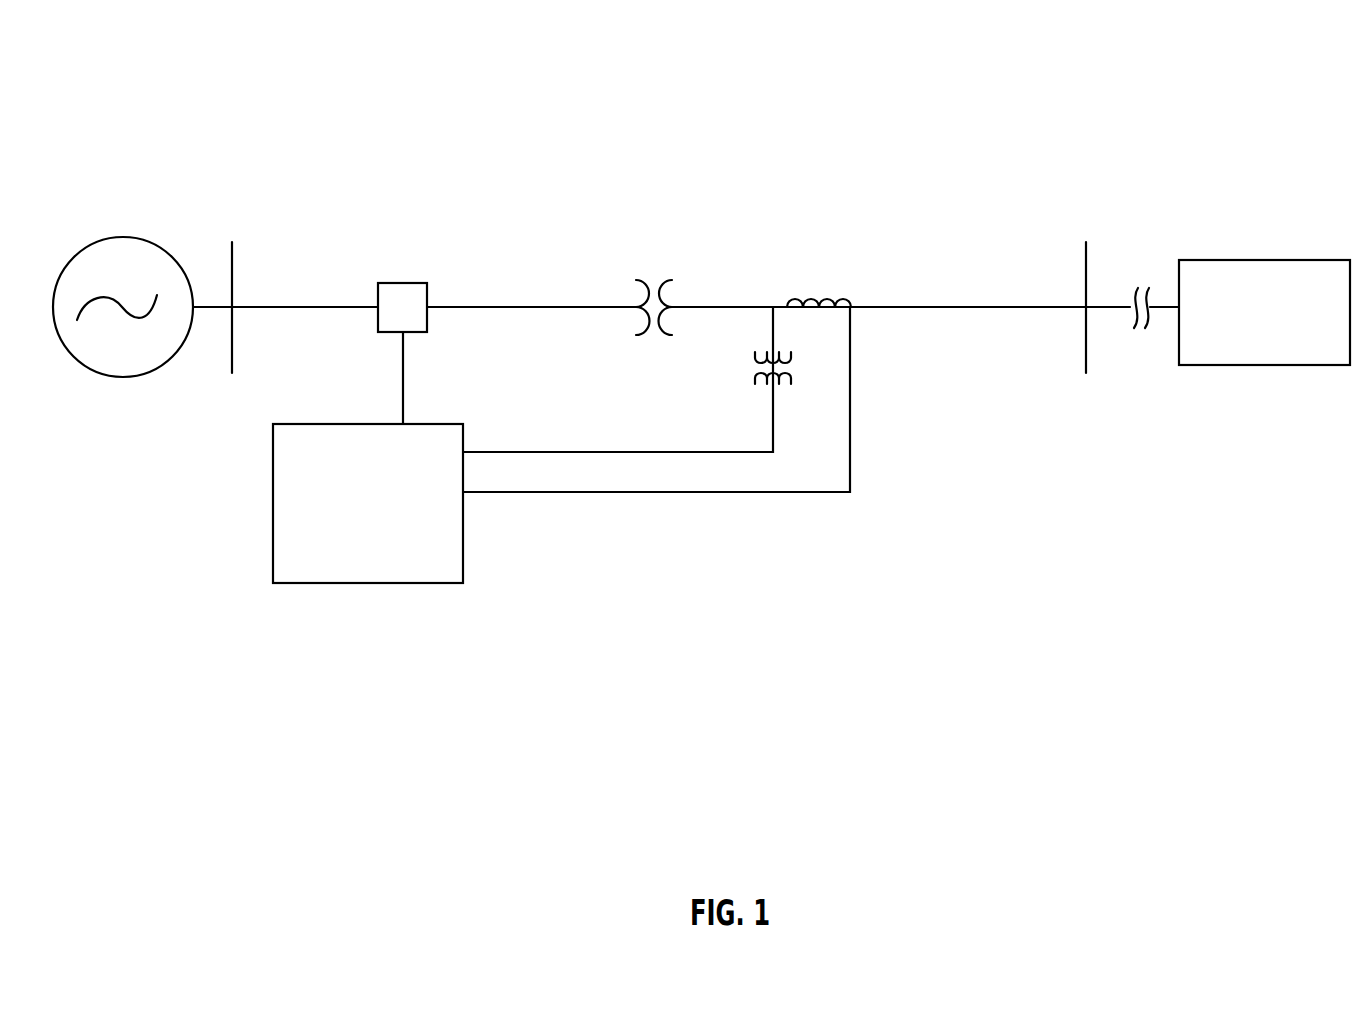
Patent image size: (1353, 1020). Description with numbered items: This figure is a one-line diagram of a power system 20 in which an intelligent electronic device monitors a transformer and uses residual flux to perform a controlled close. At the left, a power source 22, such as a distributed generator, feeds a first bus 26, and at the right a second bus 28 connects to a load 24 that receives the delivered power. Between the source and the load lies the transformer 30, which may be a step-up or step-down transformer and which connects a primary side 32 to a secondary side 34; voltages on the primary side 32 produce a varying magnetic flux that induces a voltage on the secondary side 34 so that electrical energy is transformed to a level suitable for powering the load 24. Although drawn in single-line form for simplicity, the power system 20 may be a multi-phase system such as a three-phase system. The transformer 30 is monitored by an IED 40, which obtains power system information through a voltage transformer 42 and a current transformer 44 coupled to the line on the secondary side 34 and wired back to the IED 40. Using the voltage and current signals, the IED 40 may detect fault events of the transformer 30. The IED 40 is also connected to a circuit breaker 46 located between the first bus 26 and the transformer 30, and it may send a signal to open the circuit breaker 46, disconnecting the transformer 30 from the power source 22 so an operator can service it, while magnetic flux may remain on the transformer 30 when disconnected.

The power system 20 is at (997, 62).
The power source 22 is at (118, 378).
The load 24 is at (1220, 365).
The first bus 26 is at (232, 253).
The second bus 28 is at (1087, 250).
The transformer 30 is at (642, 300).
The primary side 32 is at (580, 238).
The secondary side 34 is at (718, 248).
The intelligent electronic device (IED) 40 is at (318, 585).
The voltage transformer 42 is at (755, 379).
The current transformer 44 is at (814, 300).
The circuit breaker 46 is at (402, 283).